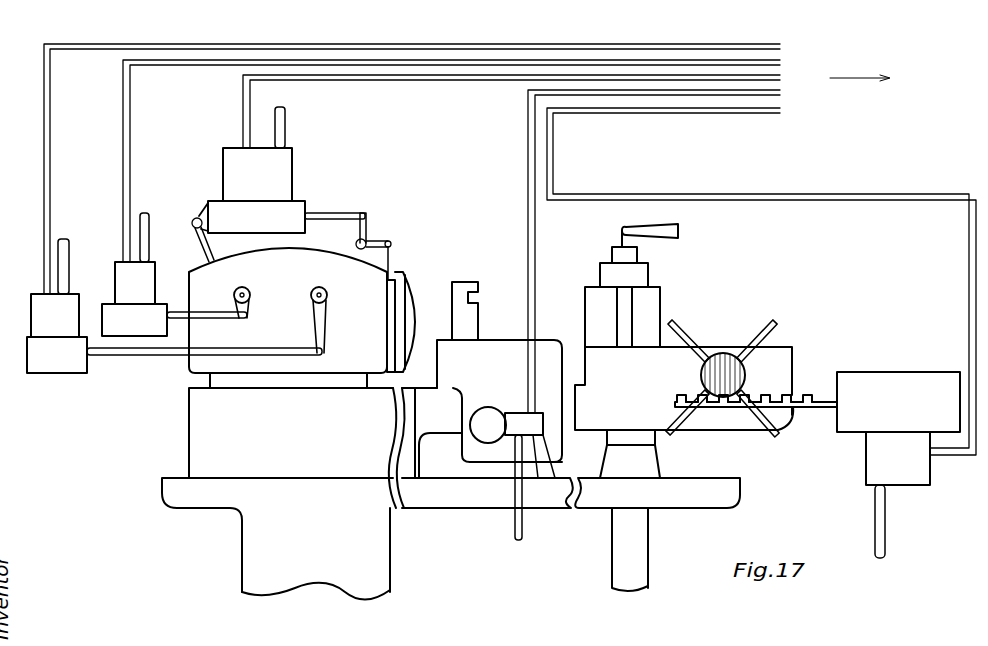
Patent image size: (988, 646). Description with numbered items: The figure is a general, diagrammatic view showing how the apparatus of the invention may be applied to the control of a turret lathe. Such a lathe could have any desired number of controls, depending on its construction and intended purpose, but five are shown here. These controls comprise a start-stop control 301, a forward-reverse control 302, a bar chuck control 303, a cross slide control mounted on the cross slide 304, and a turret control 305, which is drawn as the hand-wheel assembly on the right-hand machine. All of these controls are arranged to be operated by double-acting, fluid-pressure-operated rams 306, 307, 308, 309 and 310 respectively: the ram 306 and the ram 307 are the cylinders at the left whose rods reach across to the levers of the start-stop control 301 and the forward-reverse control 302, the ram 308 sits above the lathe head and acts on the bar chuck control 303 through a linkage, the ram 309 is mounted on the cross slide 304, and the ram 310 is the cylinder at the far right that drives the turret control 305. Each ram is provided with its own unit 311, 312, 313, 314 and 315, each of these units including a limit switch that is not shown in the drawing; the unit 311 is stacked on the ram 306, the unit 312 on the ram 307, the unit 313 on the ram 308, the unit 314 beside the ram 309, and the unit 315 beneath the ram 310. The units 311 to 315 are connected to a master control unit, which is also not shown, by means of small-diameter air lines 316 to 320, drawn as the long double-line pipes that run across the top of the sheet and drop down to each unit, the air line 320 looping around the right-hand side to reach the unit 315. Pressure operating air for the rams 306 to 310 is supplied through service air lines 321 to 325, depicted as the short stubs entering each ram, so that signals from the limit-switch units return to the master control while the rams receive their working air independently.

The start-stop control 301 is at (252, 305).
The forward-reverse control 302 is at (308, 301).
The bar chuck control 303 is at (359, 224).
The cross slide 304 is at (553, 462).
The turret control 305 is at (730, 378).
The double-acting fluid-pressure-operated ram 306 is at (152, 328).
The double-acting fluid-pressure-operated ram 307 is at (77, 363).
The double-acting fluid-pressure-operated ram 308 is at (262, 214).
The double-acting fluid-pressure-operated ram 309 is at (487, 444).
The double-acting fluid-pressure-operated ram 310 is at (846, 372).
The unit 311 is at (122, 261).
The unit 312 is at (63, 328).
The unit 313 is at (268, 160).
The unit 314 is at (538, 437).
The unit 315 is at (888, 448).
The small-diameter air line 316 is at (780, 63).
The small-diameter air line 317 is at (780, 47).
The small-diameter air line 318 is at (780, 78).
The small-diameter air line 319 is at (780, 93).
The small-diameter air line 320 is at (780, 111).
The service air line 321 is at (149, 222).
The service air line 322 is at (66, 238).
The service air line 323 is at (287, 118).
The service air line 324 is at (513, 517).
The service air line 325 is at (875, 498).